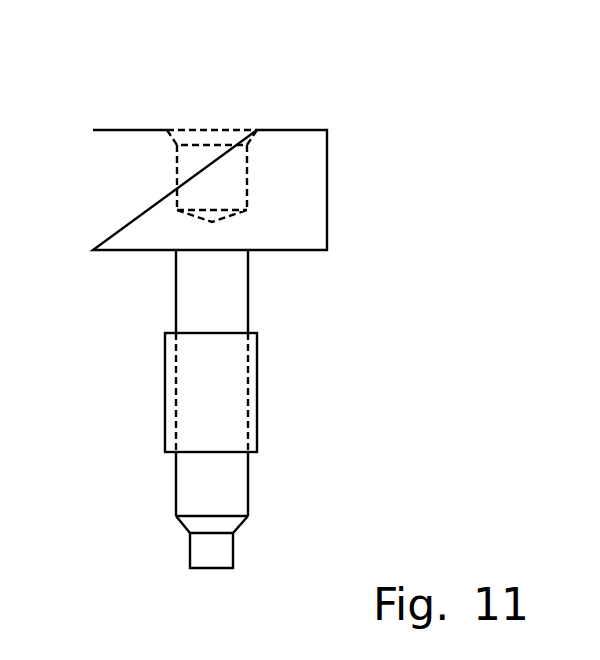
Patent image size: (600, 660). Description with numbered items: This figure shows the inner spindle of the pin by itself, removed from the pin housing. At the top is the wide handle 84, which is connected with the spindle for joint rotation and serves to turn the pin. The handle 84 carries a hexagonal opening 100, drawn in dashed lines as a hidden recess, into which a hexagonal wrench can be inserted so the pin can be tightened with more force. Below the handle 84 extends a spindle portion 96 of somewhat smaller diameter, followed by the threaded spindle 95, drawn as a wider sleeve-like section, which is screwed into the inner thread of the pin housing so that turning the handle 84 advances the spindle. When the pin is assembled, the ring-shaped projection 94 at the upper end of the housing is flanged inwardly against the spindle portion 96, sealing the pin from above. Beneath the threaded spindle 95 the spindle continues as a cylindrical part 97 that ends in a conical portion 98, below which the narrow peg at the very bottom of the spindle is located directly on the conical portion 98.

The handle 84 is at (117, 148).
The hexagonal opening 100 is at (210, 175).
The spindle portion 96 is at (223, 288).
The threaded spindle 95 is at (253, 396).
The lower shank portion 97 is at (226, 473).
The conical portion 98 is at (218, 526).
The ring-shaped projection 94 is at (214, 553).